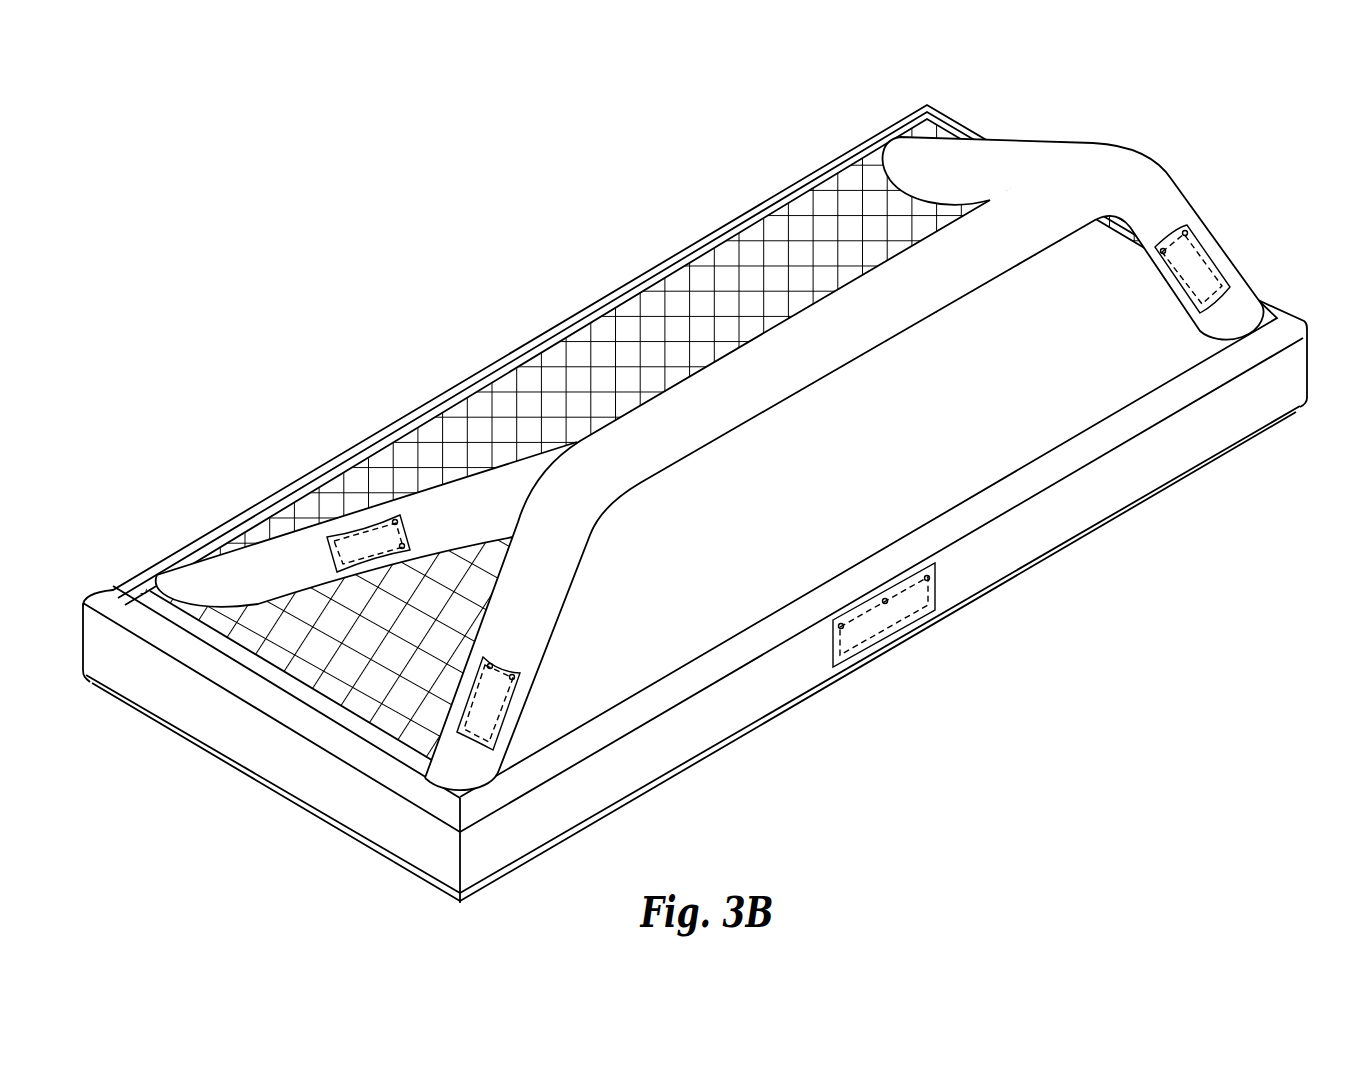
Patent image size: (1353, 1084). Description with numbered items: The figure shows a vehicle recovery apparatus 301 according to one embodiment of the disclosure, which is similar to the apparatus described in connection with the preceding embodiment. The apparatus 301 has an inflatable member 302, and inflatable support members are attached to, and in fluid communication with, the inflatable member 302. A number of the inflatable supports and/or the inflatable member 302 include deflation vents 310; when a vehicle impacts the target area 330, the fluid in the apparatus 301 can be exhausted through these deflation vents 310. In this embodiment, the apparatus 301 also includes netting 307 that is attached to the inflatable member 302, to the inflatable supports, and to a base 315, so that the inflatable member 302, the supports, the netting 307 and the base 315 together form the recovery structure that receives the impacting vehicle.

The apparatus 301 is at (318, 252).
The inflatable member 302 is at (1193, 212).
The netting 307 is at (553, 365).
The deflation vents 310 is at (1168, 226).
The base 315 is at (332, 783).
The target area 330 is at (800, 575).